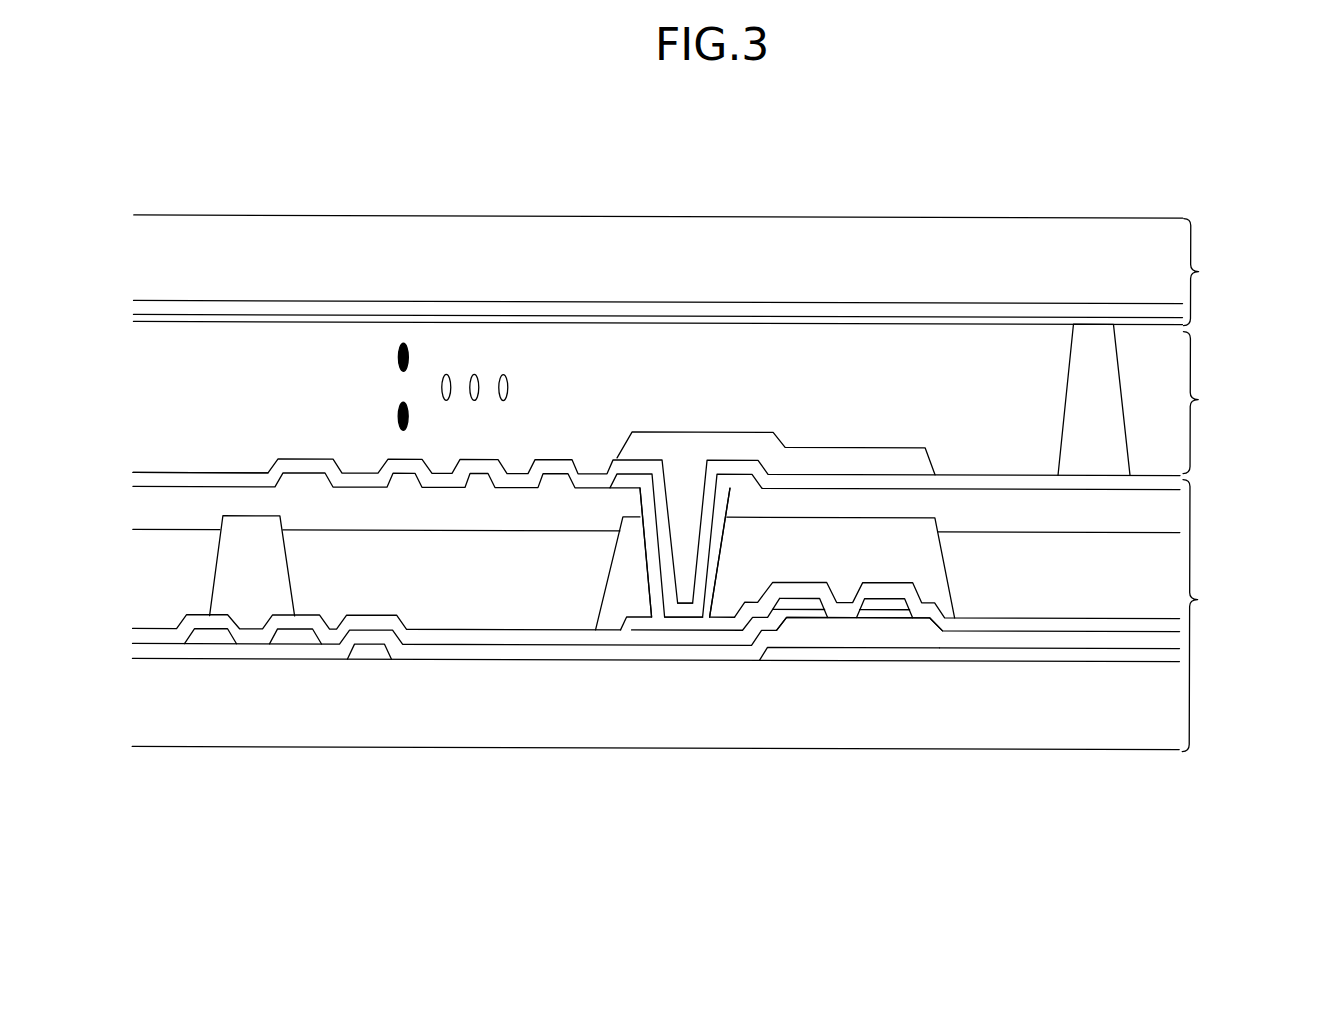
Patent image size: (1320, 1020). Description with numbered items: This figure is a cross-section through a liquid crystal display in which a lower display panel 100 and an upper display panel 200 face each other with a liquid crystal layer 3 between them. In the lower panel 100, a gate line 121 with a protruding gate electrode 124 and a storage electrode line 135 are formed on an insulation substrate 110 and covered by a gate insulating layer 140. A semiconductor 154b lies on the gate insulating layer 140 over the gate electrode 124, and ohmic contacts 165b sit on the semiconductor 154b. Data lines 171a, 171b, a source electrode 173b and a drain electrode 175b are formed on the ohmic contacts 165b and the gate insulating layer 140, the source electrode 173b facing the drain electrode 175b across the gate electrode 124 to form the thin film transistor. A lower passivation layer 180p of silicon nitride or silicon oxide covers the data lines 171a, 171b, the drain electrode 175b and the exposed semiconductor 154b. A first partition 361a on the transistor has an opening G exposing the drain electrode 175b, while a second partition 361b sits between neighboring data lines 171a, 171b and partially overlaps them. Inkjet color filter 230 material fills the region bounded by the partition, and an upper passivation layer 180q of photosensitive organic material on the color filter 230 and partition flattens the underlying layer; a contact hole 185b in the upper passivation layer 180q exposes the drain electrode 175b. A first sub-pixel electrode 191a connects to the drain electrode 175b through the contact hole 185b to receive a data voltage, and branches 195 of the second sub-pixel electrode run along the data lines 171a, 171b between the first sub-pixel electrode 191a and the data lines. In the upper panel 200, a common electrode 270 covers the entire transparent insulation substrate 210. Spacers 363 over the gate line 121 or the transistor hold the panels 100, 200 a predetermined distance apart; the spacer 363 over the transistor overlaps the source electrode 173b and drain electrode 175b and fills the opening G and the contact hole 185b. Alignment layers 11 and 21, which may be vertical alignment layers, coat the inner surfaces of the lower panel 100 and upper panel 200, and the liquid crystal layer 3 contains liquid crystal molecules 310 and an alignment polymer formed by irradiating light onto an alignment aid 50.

The common electrode 270 is at (703, 312).
The transparent insulation substrate 210 is at (835, 240).
The spacer 363 is at (1097, 347).
The upper display panel 200 is at (1213, 272).
The alignment aid 50 is at (398, 358).
The liquid crystal molecules 310 is at (508, 383).
The alignment layer 21 is at (955, 324).
The liquid crystal layer 3 is at (1201, 403).
The alignment layer 11 is at (168, 480).
The second partition 361b is at (248, 553).
The branch 195 is at (303, 481).
The first sub-pixel electrode 191a is at (405, 483).
The opening G is at (723, 553).
The contact hole 185b is at (728, 505).
The lower display panel 100 is at (1212, 616).
The data line 171a is at (208, 637).
The data line 171b is at (293, 637).
The storage electrode line 135 is at (370, 652).
The lower passivation layer 180p is at (440, 637).
The upper passivation layer 180q is at (545, 512).
The gate insulating layer 140 is at (690, 652).
The ohmic contact 165b is at (808, 612).
The semiconductor 154b is at (850, 622).
The second source electrode 173b is at (893, 605).
The gate line 121 is at (1037, 653).
The color filter 230 is at (487, 583).
The insulation substrate 110 is at (1158, 717).
The first partition 361a is at (630, 590).
The second drain electrode 175b is at (733, 638).
The gate electrode 124 is at (830, 652).